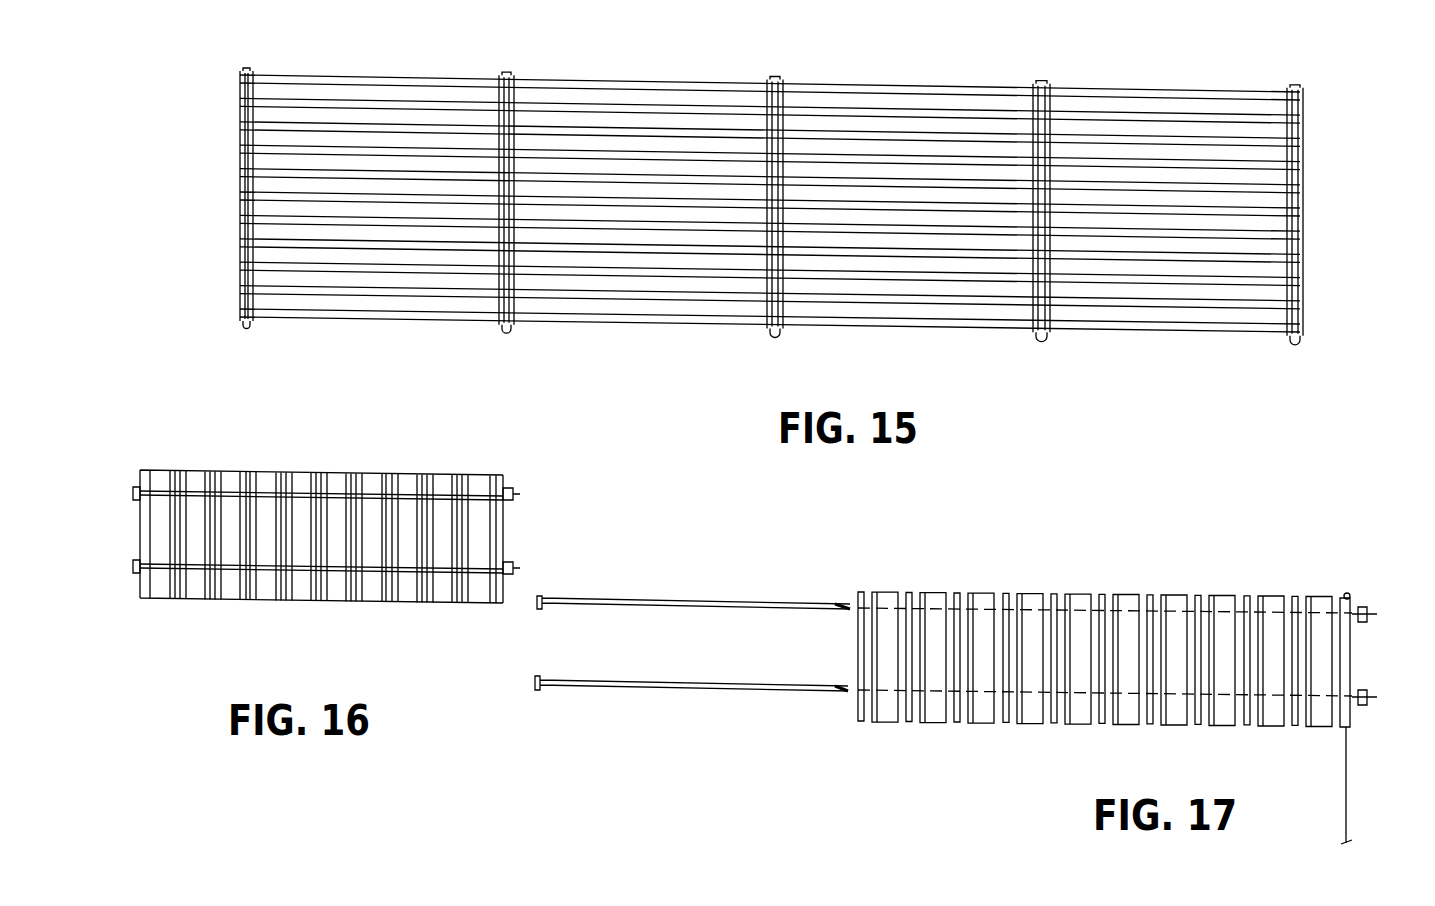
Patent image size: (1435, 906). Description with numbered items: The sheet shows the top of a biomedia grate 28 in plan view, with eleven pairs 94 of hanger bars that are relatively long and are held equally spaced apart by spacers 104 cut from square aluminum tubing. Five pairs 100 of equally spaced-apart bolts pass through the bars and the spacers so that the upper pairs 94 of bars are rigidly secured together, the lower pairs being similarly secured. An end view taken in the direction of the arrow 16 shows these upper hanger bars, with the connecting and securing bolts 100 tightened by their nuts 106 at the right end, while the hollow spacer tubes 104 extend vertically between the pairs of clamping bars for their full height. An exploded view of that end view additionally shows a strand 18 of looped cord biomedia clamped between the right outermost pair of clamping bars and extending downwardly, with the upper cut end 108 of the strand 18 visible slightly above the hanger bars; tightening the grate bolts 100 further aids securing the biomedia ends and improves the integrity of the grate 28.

In FIG. 15, the grate 28 is at (757, 210).
In FIG. 15, the arrow 16 is at (208, 240).
In FIG. 15, the pairs of hanger bars 94 is at (588, 80).
In FIG. 17, the pairs of hanger bars 94 is at (910, 594).
In FIG. 15, the pairs of bolts 100 is at (512, 78).
In FIG. 16, the pairs of bolts 100 is at (230, 470).
In FIG. 17, the pairs of bolts 100 is at (690, 642).
In FIG. 15, the spacers 104 is at (515, 207).
In FIG. 16, the spacers 104 is at (340, 478).
In FIG. 17, the spacers 104 is at (988, 726).
In FIG. 16, the nuts 106 is at (518, 492).
In FIG. 17, the upper cut end 108 is at (1349, 596).
In FIG. 17, the strand of looped cord biomedia 18 is at (1345, 768).